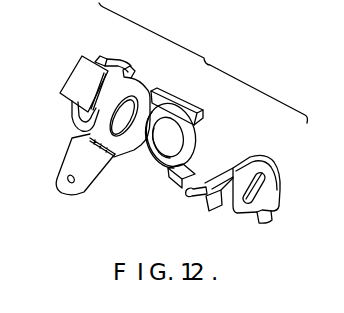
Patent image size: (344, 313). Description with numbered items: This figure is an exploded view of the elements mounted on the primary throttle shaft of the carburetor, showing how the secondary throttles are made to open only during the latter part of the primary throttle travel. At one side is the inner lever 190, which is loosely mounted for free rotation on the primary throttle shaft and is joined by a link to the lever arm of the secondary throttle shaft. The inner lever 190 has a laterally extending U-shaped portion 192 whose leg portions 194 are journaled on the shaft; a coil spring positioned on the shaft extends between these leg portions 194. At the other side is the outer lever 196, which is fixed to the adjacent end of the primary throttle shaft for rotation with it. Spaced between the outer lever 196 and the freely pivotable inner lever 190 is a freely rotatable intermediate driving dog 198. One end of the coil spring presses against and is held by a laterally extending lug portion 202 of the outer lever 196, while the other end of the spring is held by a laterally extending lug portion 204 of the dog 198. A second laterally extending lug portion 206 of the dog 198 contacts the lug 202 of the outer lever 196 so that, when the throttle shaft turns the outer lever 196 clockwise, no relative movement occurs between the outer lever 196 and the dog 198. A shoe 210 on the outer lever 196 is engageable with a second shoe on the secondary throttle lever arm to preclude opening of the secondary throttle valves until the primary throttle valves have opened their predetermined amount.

The inner lever 190 is at (84, 187).
The U-shaped portion 192 is at (81, 52).
The leg portions 194 is at (134, 70).
The outer lever 196 is at (233, 169).
The intermediate driving dog 198 is at (147, 153).
The lug portion 202 is at (264, 218).
The lug portion 204 is at (182, 98).
The second lug portion 206 is at (172, 180).
The shoe 210 is at (200, 195).